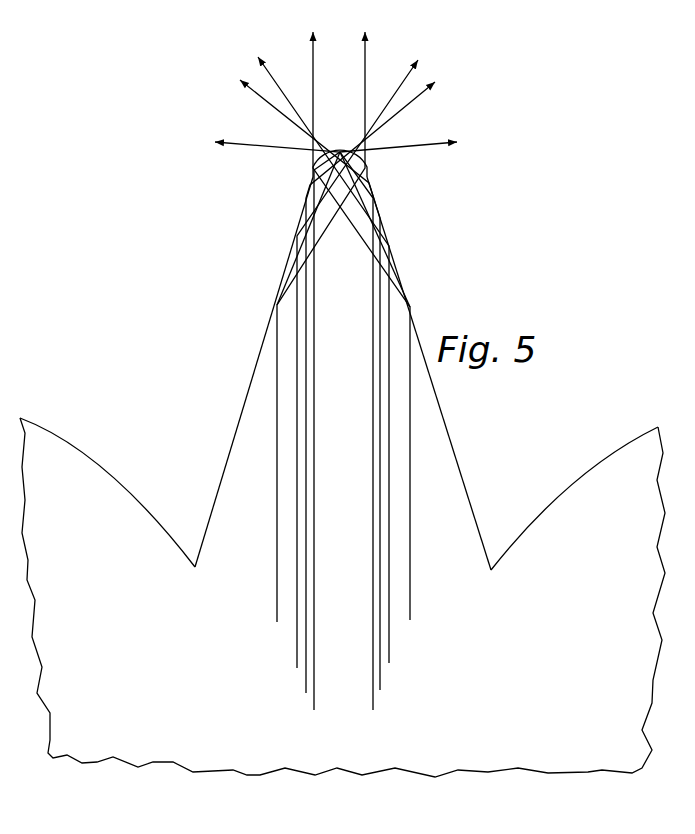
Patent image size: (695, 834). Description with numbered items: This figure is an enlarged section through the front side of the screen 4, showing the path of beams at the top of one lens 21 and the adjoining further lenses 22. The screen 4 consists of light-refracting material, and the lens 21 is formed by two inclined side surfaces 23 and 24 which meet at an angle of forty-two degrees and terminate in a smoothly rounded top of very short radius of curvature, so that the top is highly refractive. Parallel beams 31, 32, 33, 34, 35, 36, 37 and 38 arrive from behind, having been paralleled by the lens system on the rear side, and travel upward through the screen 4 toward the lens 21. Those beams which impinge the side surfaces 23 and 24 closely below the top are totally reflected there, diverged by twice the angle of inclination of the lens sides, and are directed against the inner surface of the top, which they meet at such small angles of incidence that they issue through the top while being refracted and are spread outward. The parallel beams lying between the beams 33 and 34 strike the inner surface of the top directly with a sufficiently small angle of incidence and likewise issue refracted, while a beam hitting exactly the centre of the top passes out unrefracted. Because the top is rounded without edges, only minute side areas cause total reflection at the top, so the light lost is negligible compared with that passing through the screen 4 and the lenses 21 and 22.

The screen 4 is at (580, 753).
The lens 21 is at (436, 432).
The further lens 22 is at (128, 502).
The side surface 23 is at (258, 365).
The side surface 24 is at (423, 327).
The beam 31 is at (368, 46).
The beam 32 is at (406, 72).
The beam 33 is at (431, 88).
The beam 34 is at (438, 147).
The beam 35 is at (225, 147).
The beam 36 is at (247, 91).
The beam 37 is at (278, 76).
The beam 38 is at (315, 52).